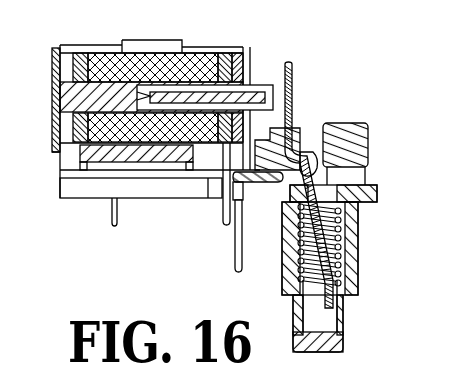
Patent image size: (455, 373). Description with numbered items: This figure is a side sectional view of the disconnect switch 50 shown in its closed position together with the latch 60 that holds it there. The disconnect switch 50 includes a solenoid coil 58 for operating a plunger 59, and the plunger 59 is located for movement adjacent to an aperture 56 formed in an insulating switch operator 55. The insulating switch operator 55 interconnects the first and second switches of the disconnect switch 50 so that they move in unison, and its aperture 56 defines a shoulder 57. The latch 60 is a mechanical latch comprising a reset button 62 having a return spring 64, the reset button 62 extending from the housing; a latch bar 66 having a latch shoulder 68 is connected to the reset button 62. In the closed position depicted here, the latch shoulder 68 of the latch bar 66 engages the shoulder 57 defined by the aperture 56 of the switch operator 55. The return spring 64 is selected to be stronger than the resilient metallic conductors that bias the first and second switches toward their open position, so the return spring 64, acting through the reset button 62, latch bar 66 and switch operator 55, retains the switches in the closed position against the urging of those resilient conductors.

The disconnect switch 50 is at (308, 56).
The insulating switch operator 55 is at (368, 132).
The aperture 56 is at (318, 162).
The shoulder 57 is at (297, 162).
The solenoid coil 58 is at (110, 72).
The plunger 59 is at (258, 83).
The latch 60 is at (230, 250).
The reset button 62 is at (342, 325).
The return spring 64 is at (300, 253).
The latch bar 66 is at (290, 62).
The latch shoulder 68 is at (295, 160).